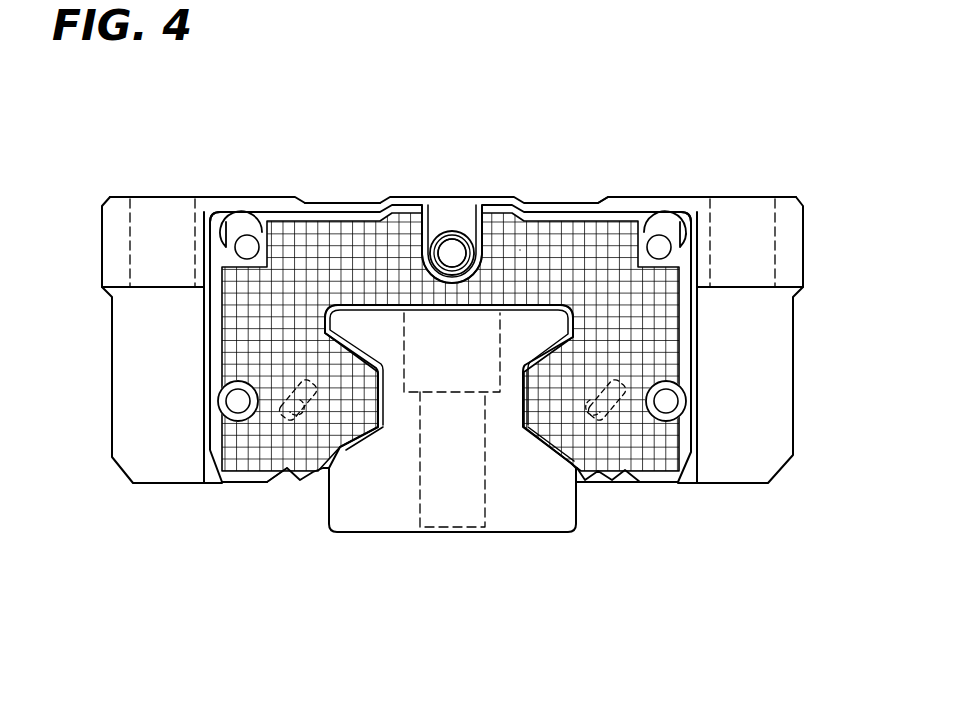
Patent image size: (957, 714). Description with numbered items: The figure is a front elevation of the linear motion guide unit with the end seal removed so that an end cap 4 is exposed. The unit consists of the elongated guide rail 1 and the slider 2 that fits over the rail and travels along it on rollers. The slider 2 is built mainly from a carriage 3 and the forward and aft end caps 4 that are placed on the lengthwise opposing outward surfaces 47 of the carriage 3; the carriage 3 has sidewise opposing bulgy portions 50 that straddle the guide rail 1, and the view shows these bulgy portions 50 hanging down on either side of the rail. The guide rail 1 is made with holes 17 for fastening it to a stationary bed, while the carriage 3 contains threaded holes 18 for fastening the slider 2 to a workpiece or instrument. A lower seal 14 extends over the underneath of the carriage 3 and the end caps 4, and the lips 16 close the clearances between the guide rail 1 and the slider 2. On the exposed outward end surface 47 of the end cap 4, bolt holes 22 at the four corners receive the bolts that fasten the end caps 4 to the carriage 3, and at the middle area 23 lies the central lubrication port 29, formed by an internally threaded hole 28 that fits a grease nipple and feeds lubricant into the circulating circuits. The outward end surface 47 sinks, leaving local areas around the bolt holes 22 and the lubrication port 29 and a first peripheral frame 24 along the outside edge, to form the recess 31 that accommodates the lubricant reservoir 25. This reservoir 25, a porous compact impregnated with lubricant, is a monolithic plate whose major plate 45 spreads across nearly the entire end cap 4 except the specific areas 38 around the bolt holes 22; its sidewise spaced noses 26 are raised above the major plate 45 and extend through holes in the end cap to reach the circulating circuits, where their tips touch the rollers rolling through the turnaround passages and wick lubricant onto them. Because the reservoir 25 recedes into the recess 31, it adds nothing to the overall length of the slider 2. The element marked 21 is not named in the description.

The guide rail 1 is at (390, 490).
The slider 2 is at (748, 197).
The carriage 3 is at (653, 207).
The end cap 4 is at (586, 217).
The lower seal 14 is at (303, 477).
The lip 16 is at (257, 468).
The hole 17 is at (476, 495).
The threaded hole 18 is at (137, 220).
The cover corner 21 is at (266, 232).
The bolt hole 22 is at (245, 235).
The middle area 23 is at (457, 225).
The first frame 24 is at (690, 318).
The lubricant reservoir 25 is at (520, 250).
The nose 26 is at (618, 478).
The internally threaded hole 28 is at (434, 222).
The lubrication port 29 is at (460, 246).
The recess 31 is at (677, 433).
The specific area 38 is at (218, 226).
The major plate 45 is at (347, 212).
The outward end surface 47 is at (612, 220).
The bulgy portion 50 is at (207, 468).